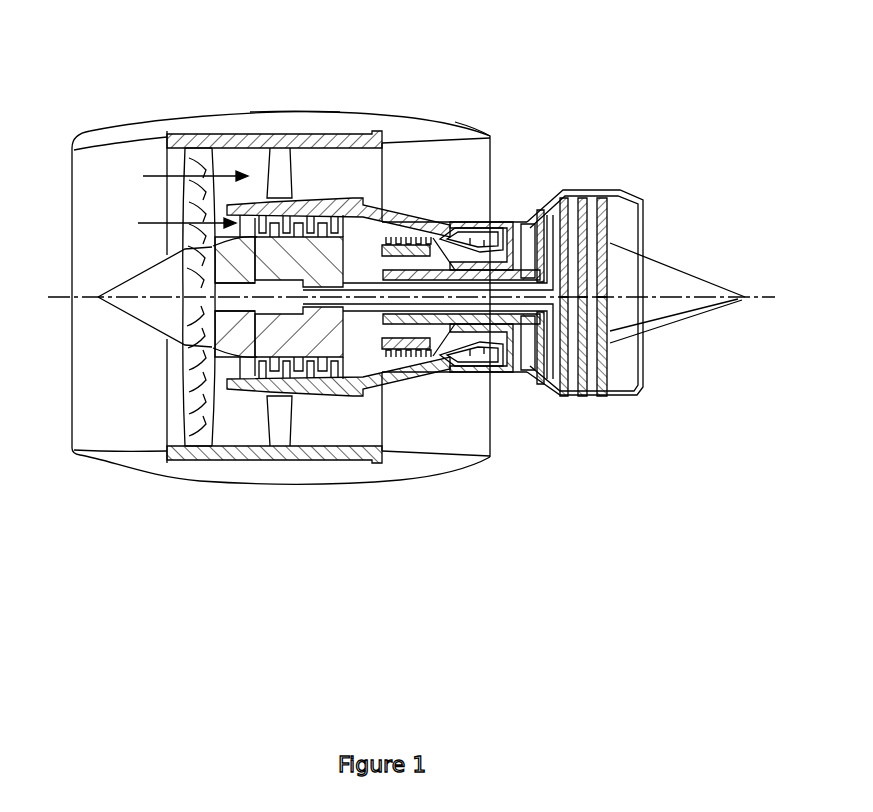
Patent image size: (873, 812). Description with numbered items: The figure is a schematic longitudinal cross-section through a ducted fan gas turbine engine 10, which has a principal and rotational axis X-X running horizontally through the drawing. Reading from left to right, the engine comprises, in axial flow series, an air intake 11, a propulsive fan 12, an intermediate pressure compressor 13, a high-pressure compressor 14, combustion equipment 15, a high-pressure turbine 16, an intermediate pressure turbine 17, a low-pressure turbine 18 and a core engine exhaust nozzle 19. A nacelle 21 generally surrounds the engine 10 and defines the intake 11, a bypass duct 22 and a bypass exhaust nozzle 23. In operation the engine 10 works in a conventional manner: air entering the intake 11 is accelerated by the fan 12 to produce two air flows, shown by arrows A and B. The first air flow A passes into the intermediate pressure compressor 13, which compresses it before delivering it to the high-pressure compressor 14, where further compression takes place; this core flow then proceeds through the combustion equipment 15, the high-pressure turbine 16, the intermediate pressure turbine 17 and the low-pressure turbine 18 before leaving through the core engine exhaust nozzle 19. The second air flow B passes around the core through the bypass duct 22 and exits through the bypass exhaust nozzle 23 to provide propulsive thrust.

The ducted fan gas turbine engine 10 is at (417, 257).
The air intake 11 is at (118, 150).
The propulsive fan 12 is at (192, 406).
The intermediate pressure compressor 13 is at (312, 380).
The high-pressure compressor 14 is at (410, 236).
The combustion equipment 15 is at (450, 367).
The high-pressure turbine 16 is at (505, 371).
The intermediate pressure turbine 17 is at (539, 214).
The low-pressure turbine 18 is at (559, 400).
The core engine exhaust nozzle 19 is at (640, 189).
The nacelle 21 is at (289, 108).
The bypass duct 22 is at (465, 177).
The bypass exhaust nozzle 23 is at (490, 136).